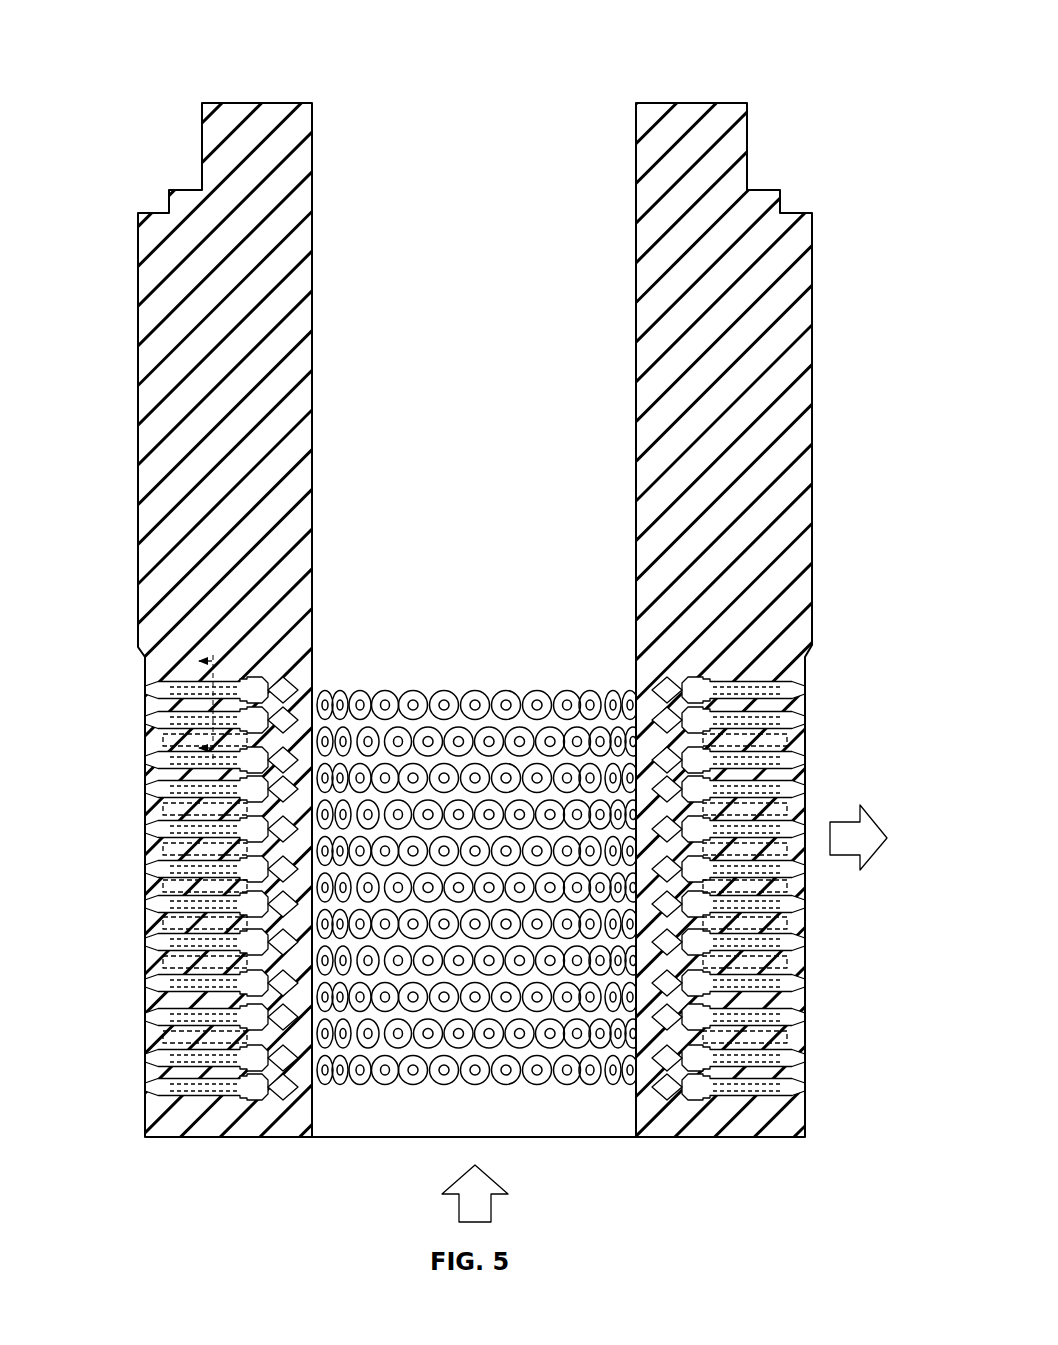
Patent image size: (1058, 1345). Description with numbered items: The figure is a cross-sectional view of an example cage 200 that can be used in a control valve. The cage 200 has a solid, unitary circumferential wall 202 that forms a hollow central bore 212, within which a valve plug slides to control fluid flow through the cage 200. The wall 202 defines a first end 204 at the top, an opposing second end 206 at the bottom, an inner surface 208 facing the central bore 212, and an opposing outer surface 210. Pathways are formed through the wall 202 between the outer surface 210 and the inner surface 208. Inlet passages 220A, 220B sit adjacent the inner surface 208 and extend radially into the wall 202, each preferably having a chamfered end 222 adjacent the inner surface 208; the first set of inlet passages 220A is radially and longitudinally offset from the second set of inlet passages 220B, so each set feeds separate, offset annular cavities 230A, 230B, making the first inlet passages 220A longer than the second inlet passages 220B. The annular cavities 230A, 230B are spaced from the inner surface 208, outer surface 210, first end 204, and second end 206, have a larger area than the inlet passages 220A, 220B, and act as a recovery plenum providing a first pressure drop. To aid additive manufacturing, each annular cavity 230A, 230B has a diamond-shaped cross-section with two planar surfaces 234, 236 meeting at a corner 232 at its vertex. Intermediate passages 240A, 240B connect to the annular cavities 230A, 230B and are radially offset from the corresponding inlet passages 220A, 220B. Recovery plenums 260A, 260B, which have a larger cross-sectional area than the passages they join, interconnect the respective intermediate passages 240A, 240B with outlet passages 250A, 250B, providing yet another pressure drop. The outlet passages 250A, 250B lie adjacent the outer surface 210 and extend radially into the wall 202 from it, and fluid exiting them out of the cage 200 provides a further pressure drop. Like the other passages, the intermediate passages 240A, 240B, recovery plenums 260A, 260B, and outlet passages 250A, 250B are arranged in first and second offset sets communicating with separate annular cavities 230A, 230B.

The cage 200 is at (252, 47).
The circumferential wall 202 is at (139, 260).
The first end 204 is at (668, 100).
The second end 206 is at (686, 1144).
The inner surface 208 is at (316, 176).
The outer surface 210 is at (136, 344).
The central bore 212 is at (508, 338).
The first set of inlet passages 220A is at (463, 837).
The second set of inlet passages 220B is at (463, 837).
The end 222 is at (463, 837).
The first set of annular cavities 230A is at (300, 712).
The second set of annular cavities 230B is at (640, 737).
The corner 232 is at (276, 692).
The planar surface 234 is at (463, 837).
The planar surface 236 is at (463, 837).
The first set of intermediate passages 240A is at (165, 823).
The second set of intermediate passages 240B is at (786, 851).
The first set of outlet passages 250A is at (160, 823).
The second set of outlet passages 250B is at (786, 851).
The first set of recovery plenums 260A is at (160, 823).
The second set of recovery plenums 260B is at (786, 851).